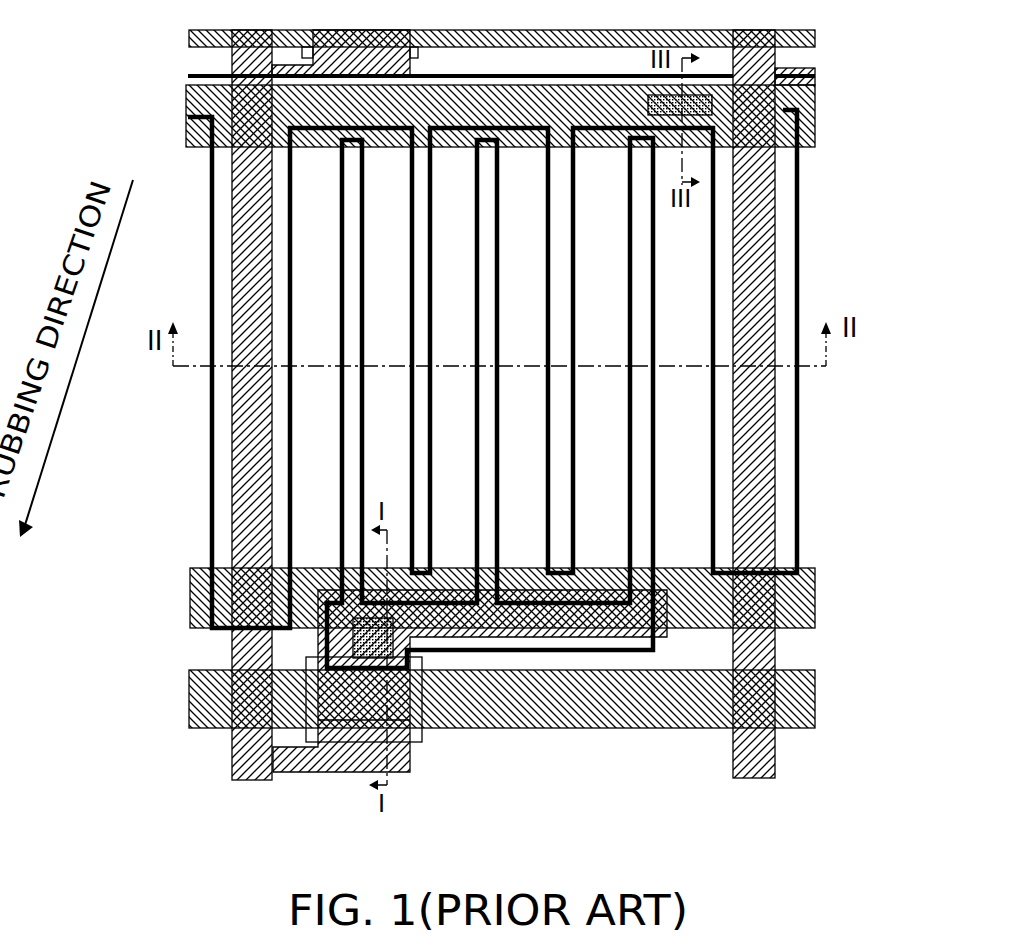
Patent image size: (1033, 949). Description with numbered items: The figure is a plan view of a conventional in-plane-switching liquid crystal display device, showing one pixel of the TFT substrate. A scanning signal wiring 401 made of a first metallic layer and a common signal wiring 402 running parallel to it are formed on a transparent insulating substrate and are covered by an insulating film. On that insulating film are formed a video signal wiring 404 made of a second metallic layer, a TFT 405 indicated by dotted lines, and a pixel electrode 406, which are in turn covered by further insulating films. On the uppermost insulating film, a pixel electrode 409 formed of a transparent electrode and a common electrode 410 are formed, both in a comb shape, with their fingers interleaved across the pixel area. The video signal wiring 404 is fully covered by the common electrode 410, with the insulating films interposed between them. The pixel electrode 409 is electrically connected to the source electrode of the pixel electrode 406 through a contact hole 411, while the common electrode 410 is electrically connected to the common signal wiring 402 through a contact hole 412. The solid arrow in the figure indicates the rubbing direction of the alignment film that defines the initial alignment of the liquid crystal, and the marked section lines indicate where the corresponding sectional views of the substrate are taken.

The scanning signal wiring 401 is at (198, 700).
The common signal wiring 402 is at (186, 100).
The video signal wiring 404 is at (247, 758).
The TFT 405 is at (348, 700).
The pixel electrode 406 is at (667, 612).
The pixel electrode 409 is at (657, 472).
The common electrode 410 is at (797, 197).
The contact hole 411 is at (375, 640).
The contact hole 412 is at (770, 95).